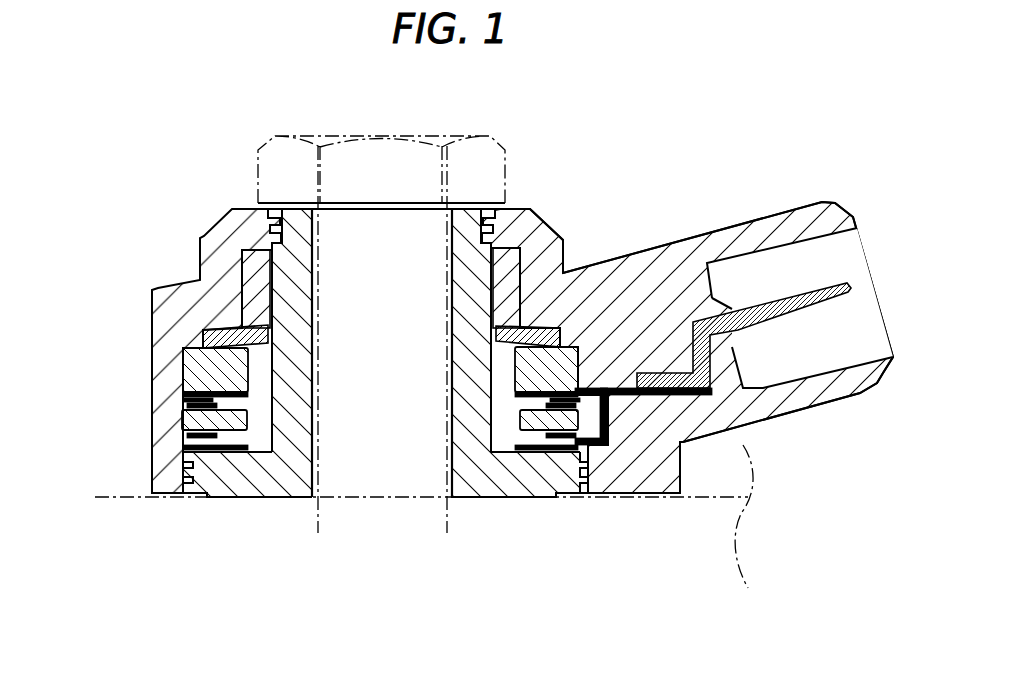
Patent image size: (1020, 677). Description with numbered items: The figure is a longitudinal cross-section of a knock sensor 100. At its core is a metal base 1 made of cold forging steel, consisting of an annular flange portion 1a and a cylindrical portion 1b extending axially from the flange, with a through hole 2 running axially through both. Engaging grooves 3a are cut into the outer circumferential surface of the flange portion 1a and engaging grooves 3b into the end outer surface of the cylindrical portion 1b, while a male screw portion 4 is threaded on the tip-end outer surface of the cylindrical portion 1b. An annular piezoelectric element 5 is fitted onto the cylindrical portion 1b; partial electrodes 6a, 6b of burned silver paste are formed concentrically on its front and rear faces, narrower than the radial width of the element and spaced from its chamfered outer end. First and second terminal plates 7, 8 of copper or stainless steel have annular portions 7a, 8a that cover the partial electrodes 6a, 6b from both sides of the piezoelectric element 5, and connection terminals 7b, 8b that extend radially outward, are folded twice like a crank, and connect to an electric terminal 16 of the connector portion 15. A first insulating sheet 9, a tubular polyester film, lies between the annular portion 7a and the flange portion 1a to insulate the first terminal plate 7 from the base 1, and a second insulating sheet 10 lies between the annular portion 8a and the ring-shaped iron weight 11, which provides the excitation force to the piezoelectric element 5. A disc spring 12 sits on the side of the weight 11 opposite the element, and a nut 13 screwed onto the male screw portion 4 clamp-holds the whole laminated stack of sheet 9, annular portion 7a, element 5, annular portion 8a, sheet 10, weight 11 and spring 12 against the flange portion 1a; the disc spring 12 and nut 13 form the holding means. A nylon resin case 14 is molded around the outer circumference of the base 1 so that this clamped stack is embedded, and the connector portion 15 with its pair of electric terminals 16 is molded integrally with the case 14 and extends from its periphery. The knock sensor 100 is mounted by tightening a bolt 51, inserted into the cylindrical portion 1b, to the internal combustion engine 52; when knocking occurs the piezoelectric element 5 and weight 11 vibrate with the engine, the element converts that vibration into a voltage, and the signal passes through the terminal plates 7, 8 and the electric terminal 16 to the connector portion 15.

The knock sensor 100 is at (163, 193).
The base 1 is at (360, 378).
The flange portion 1a is at (262, 477).
The cylindrical portion 1b is at (278, 393).
The through hole 2 is at (452, 452).
The engaging grooves 3a is at (183, 478).
The engaging grooves 3b is at (273, 222).
The male screw portion 4 is at (492, 300).
The piezoelectric element 5 is at (183, 420).
The partial electrode 6a is at (183, 437).
The partial electrode 6b is at (183, 405).
The first terminal plate 7 is at (520, 437).
The annular portion 7a is at (200, 452).
The connection terminal 7b is at (606, 440).
The second terminal plate 8 is at (517, 400).
The annular portion 8a is at (207, 384).
The connection terminal 8b is at (580, 452).
The first insulating sheet 9 is at (183, 445).
The second insulating sheet 10 is at (183, 397).
The weight 11 is at (520, 375).
The disc spring 12 is at (580, 273).
The nut 13 is at (533, 227).
The resin case 14 is at (195, 297).
The connector portion 15 is at (680, 262).
The electric terminal 16 is at (807, 307).
The bolt 51 is at (492, 170).
The internal combustion engine 52 is at (695, 537).